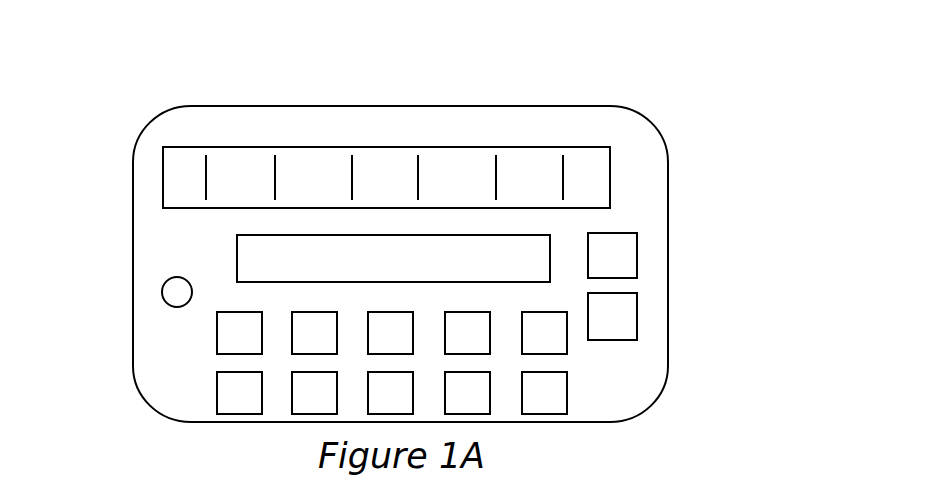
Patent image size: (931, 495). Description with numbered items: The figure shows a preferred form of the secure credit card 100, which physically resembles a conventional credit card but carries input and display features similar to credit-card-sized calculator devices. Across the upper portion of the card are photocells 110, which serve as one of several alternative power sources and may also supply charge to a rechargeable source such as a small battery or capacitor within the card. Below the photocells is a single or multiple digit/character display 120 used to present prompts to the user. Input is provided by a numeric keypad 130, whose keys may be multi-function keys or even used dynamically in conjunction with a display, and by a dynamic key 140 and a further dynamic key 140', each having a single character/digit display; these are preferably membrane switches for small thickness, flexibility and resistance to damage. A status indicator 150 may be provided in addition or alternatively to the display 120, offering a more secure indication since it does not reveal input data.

The secure credit card 100 is at (661, 107).
The photocells 110 is at (163, 183).
The digit/character display 120 is at (237, 238).
The numeric keypad 130 is at (216, 337).
The dynamic key 140 is at (665, 249).
The dynamic key 140' is at (668, 309).
The status indicator 150 is at (162, 292).